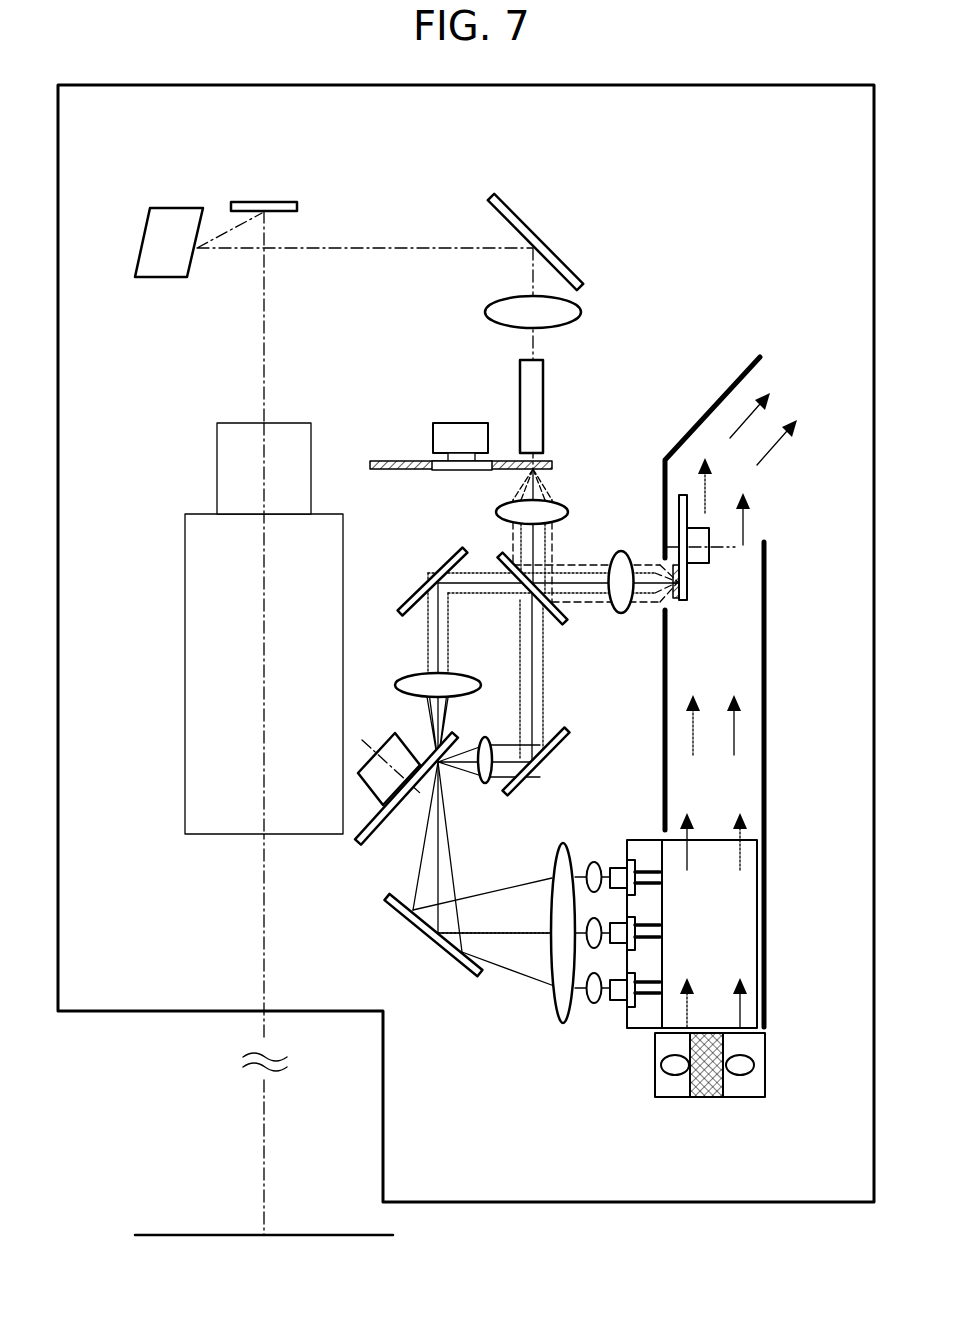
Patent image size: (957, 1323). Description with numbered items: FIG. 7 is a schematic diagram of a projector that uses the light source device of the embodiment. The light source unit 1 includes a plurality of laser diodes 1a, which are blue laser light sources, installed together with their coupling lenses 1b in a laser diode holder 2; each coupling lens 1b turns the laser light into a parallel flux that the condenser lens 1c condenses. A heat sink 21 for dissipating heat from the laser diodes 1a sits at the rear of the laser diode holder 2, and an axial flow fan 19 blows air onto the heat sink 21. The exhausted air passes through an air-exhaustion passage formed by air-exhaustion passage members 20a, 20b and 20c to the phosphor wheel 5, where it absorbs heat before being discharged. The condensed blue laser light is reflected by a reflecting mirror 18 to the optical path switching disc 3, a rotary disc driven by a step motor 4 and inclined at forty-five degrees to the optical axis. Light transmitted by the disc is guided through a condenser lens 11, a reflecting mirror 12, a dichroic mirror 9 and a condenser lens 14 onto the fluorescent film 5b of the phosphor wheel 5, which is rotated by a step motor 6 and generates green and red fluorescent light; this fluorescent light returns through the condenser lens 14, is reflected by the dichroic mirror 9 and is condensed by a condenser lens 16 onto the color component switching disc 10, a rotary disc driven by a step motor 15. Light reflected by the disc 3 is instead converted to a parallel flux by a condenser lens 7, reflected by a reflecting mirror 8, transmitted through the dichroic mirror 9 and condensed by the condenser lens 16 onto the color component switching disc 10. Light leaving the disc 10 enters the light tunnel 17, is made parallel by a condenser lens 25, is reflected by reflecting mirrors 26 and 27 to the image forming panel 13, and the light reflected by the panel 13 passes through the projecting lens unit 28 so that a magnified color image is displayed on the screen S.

The light source unit 1 is at (628, 1040).
The laser diode 1a is at (618, 868).
The coupling lens 1b is at (592, 862).
The condenser lens 1c is at (551, 948).
The laser diode holder 2 is at (643, 1020).
The optical path switching disc 3 is at (330, 860).
The step motor 4 is at (390, 745).
The phosphor wheel 5 is at (694, 610).
The fluorescent film 5b is at (676, 598).
The step motor 6 is at (700, 563).
The condenser lens 7 is at (486, 783).
The reflecting mirror 8 is at (565, 745).
The dichroic mirror 9 is at (560, 618).
The color component switching disc 10 is at (375, 461).
The condenser lens 11 is at (410, 680).
The reflecting mirror 12 is at (415, 600).
The image forming panel 13 is at (297, 206).
The condenser lens 14 is at (621, 551).
The step motor 15 is at (445, 423).
The condenser lens 16 is at (496, 514).
The light tunnel 17 is at (543, 385).
The reflecting mirror 18 is at (430, 935).
The axial flow fan 19 is at (712, 1097).
The air-exhaustion passage member 20a is at (767, 695).
The air-exhaustion passage member 20b is at (662, 695).
The air-exhaustion passage member 20c is at (705, 410).
The heat sink 21 is at (748, 943).
The condenser lens 25 is at (581, 312).
The reflecting mirror 26 is at (540, 240).
The reflecting mirror 27 is at (152, 277).
The projecting lens unit 28 is at (185, 665).
The screen S is at (383, 1235).